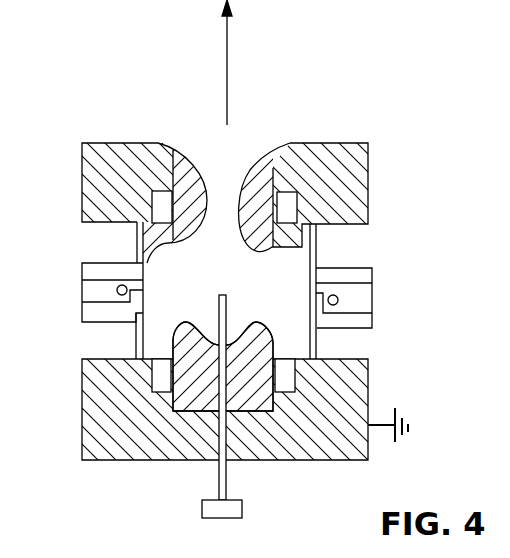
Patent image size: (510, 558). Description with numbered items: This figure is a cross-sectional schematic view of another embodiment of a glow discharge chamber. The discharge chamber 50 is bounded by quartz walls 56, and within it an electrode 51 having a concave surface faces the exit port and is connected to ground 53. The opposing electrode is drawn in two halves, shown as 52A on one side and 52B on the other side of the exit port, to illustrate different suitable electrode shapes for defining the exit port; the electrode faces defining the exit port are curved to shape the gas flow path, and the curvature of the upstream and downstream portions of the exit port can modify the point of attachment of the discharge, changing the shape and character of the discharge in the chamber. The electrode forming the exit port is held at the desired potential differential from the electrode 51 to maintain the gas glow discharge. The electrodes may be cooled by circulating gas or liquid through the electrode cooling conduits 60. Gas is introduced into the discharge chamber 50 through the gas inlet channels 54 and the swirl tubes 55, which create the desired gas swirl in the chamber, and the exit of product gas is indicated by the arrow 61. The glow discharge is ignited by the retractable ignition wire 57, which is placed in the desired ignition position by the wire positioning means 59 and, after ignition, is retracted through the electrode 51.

The discharge chamber 50 is at (217, 276).
The electrode 51 is at (170, 342).
The opposing electrode 52A is at (260, 168).
The opposing electrode 52B is at (180, 162).
The ground 53 is at (410, 424).
The gas inlet channels 54 is at (80, 280).
The swirl tubes 55 is at (118, 287).
The quartz walls 56 is at (317, 346).
The retractable ignition wire 57 is at (217, 480).
The wire positioning means 59 is at (242, 510).
The electrode cooling conduits 60 is at (297, 208).
The arrow 61 is at (247, 62).